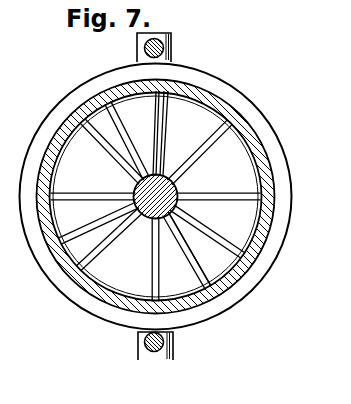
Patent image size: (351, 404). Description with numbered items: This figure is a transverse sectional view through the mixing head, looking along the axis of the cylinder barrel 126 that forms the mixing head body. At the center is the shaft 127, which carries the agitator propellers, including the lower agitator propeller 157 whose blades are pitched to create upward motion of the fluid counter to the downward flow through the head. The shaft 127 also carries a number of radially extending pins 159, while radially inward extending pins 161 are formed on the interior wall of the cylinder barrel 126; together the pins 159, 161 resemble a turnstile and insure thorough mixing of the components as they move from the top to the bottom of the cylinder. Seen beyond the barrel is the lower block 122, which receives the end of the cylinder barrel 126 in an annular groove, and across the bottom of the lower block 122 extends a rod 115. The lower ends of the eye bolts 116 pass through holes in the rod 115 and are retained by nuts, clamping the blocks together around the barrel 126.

The rod 115 is at (173, 40).
The eye bolt 116 is at (142, 50).
The lower block 122 is at (247, 107).
The cylinder barrel 126 is at (268, 180).
The shaft 127 is at (163, 175).
The agitator propeller 157 is at (188, 279).
The radially extending pin 159 is at (122, 139).
The radially inward extending pin 161 is at (98, 214).